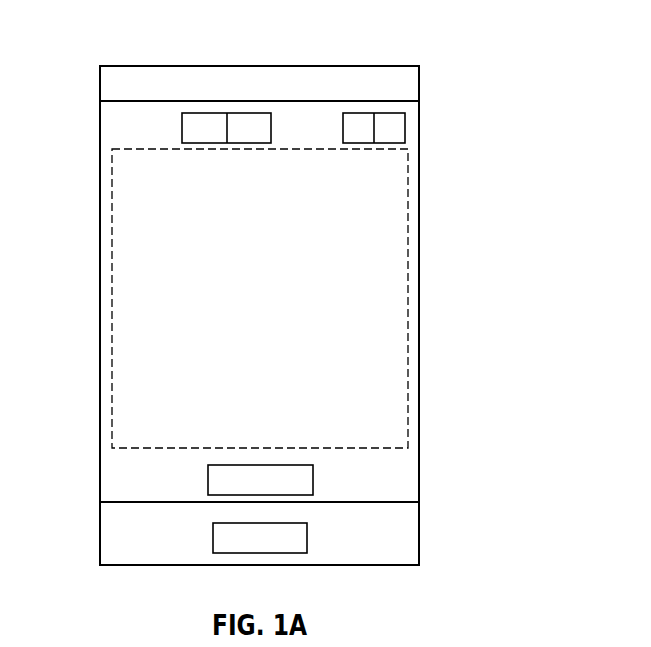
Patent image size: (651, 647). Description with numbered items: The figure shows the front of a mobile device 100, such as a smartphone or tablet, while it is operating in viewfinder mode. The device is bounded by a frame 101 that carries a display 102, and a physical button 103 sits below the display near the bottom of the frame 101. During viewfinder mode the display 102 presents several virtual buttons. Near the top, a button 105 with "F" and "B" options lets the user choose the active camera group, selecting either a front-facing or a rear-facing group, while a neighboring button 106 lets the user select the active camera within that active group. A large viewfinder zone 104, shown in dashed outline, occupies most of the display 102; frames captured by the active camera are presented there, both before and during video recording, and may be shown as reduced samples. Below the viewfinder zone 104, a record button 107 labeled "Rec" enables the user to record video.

The mobile device 100 is at (516, 53).
The frame 101 is at (419, 470).
The display 102 is at (145, 130).
The physical button 103 is at (213, 538).
The viewfinder zone 104 is at (408, 282).
The button 105 is at (272, 128).
The button 106 is at (405, 128).
The record button 107 is at (313, 480).